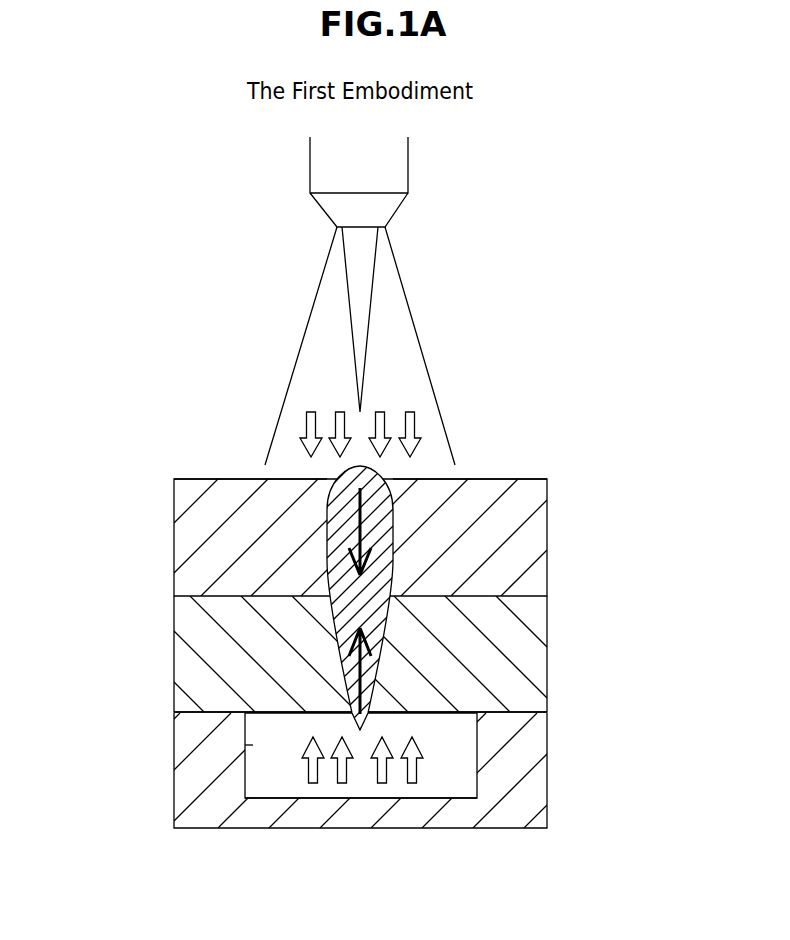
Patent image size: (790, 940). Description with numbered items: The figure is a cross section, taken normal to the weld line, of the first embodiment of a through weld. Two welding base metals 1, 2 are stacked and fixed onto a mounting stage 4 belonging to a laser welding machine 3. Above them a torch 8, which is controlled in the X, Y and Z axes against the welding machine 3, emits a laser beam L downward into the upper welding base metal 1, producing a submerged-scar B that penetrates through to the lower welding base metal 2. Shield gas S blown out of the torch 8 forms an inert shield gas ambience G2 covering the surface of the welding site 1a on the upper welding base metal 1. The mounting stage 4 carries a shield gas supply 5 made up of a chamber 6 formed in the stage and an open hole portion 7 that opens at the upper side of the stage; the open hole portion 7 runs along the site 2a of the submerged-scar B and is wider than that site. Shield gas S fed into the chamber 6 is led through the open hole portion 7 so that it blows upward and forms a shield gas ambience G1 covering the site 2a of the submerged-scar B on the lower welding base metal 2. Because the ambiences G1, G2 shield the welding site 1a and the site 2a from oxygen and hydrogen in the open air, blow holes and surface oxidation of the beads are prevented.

The welding base metal 1 is at (537, 530).
The welding site 1a is at (392, 466).
The welding base metal 2 is at (537, 663).
The site of the submerged-scar 2a is at (384, 722).
The welding machine 3 is at (462, 177).
The mounting stage 4 is at (537, 780).
The shield gas supply 5 is at (97, 688).
The chamber 6 is at (253, 753).
The open hole portion 7 is at (253, 727).
The torch 8 is at (362, 198).
The laser beam L is at (363, 268).
The shield gas ambience G2 is at (299, 323).
The shield gas ambience G1 is at (253, 782).
The shield gas S is at (408, 343).
The submerged-scar B is at (352, 715).